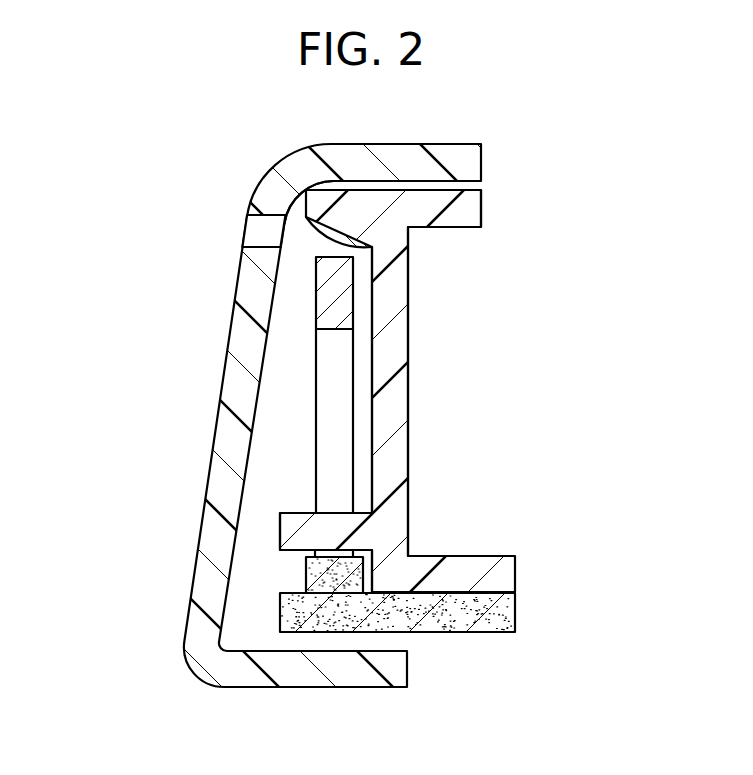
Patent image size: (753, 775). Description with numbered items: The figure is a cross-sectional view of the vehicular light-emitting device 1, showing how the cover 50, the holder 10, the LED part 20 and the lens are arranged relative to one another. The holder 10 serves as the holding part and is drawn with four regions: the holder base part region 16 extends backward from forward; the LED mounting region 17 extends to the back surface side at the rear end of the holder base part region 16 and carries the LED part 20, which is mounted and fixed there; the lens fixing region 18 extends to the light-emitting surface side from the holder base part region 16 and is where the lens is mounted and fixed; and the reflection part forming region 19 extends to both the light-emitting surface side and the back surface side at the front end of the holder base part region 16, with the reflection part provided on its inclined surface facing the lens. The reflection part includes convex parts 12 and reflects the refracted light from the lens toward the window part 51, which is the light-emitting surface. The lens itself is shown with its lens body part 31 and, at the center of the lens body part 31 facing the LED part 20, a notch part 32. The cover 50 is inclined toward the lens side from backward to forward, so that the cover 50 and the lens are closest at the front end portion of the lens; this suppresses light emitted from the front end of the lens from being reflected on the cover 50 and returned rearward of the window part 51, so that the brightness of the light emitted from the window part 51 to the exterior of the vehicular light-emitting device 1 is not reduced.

The vehicular light-emitting device 1 is at (100, 141).
The holder 10 is at (376, 387).
The convex parts 12 is at (300, 205).
The holder base part region 16 is at (395, 405).
The LED mounting region 17 is at (500, 612).
The lens fixing region 18 is at (426, 514).
The reflection part forming region 19 is at (467, 212).
The LED part 20 is at (322, 618).
The lens body part 31 is at (327, 292).
The notch part 32 is at (335, 448).
The cover 50 is at (237, 382).
The window part 51 is at (265, 242).